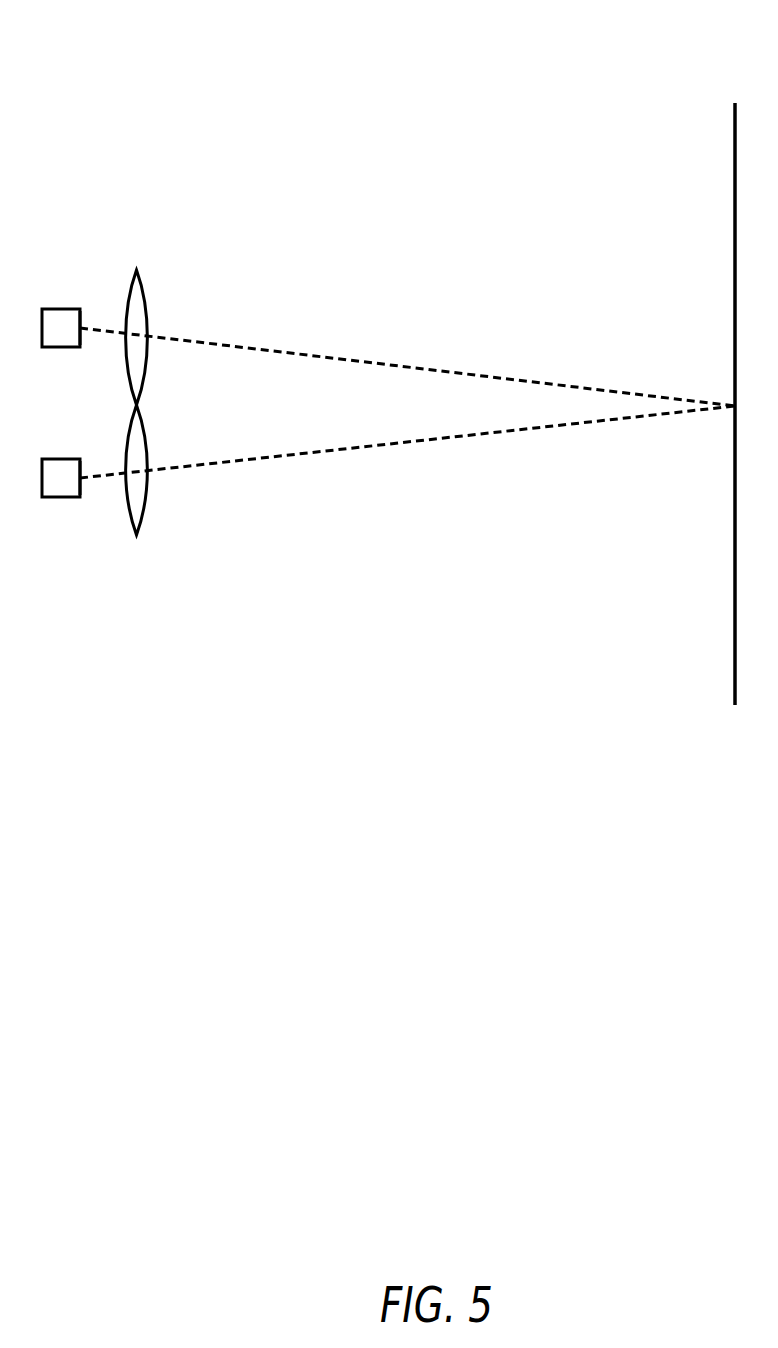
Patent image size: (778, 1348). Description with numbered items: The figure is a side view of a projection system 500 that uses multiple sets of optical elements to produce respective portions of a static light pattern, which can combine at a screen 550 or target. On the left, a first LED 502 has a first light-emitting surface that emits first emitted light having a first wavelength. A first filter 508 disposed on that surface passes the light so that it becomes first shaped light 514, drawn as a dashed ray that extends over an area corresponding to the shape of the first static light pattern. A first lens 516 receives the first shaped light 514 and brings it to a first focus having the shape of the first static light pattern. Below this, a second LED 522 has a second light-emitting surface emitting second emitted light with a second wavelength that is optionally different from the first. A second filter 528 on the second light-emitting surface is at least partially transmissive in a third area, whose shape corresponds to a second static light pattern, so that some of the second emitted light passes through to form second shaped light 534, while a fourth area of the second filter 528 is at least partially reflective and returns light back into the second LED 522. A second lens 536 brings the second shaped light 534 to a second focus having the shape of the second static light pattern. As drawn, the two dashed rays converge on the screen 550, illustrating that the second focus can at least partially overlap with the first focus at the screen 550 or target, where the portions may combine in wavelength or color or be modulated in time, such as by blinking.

The projection system 500 is at (137, 105).
The first LED 502 is at (62, 308).
The first filter 508 is at (81, 313).
The first shaped light 514 is at (98, 333).
The first lens 516 is at (136, 270).
The second LED 522 is at (62, 458).
The second filter 528 is at (81, 461).
The second shaped light 534 is at (98, 480).
The second lens 536 is at (136, 535).
The screen 550 is at (735, 158).